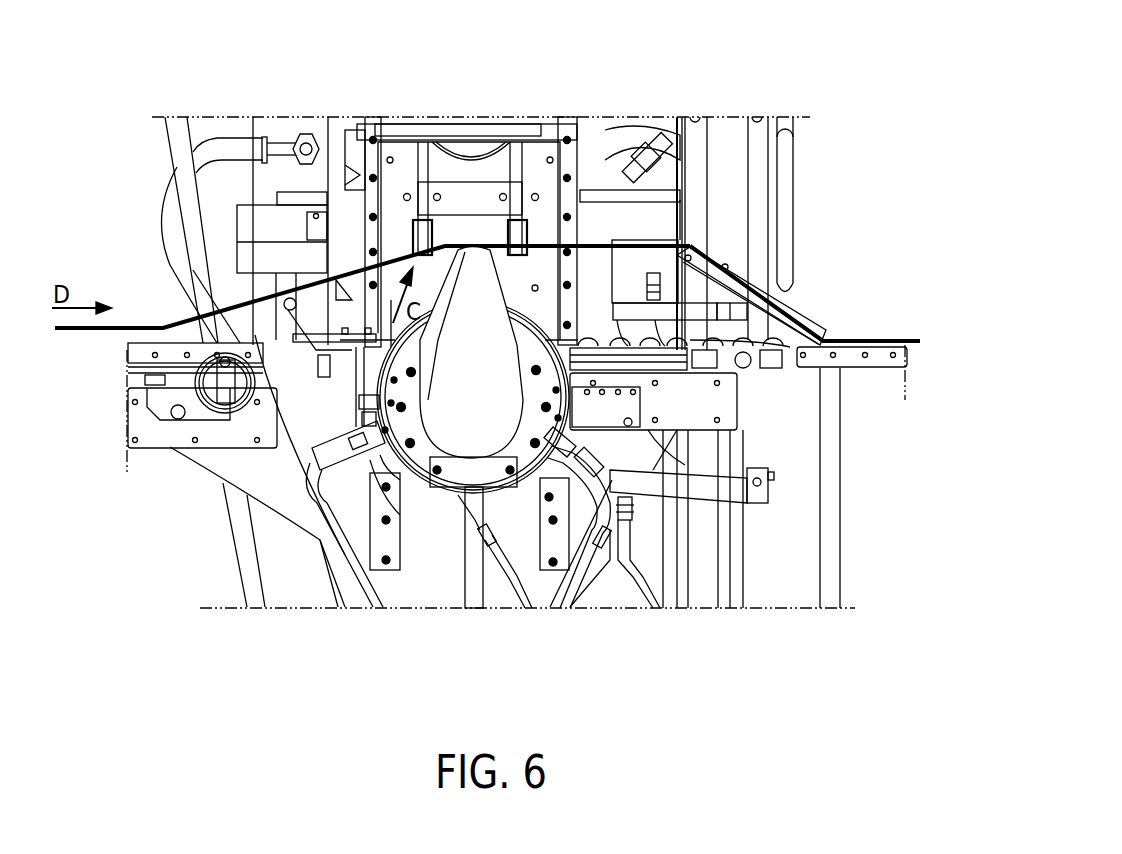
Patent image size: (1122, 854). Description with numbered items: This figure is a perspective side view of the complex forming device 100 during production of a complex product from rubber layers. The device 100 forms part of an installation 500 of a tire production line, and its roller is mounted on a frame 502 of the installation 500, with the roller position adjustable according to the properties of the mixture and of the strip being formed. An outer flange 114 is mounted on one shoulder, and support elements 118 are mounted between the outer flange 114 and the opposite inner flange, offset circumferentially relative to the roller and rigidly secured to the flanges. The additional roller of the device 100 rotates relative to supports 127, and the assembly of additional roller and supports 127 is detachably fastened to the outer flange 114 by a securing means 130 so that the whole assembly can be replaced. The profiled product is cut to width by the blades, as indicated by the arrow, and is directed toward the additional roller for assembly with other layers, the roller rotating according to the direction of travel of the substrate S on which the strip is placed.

The complex forming device 100 is at (538, 305).
The outer flange 114 is at (393, 478).
The support elements 118 is at (535, 428).
The supports 127 is at (527, 128).
The securing means 130 is at (462, 420).
The installation 500 is at (722, 92).
The frame 502 is at (203, 440).
The substrate S is at (148, 328).